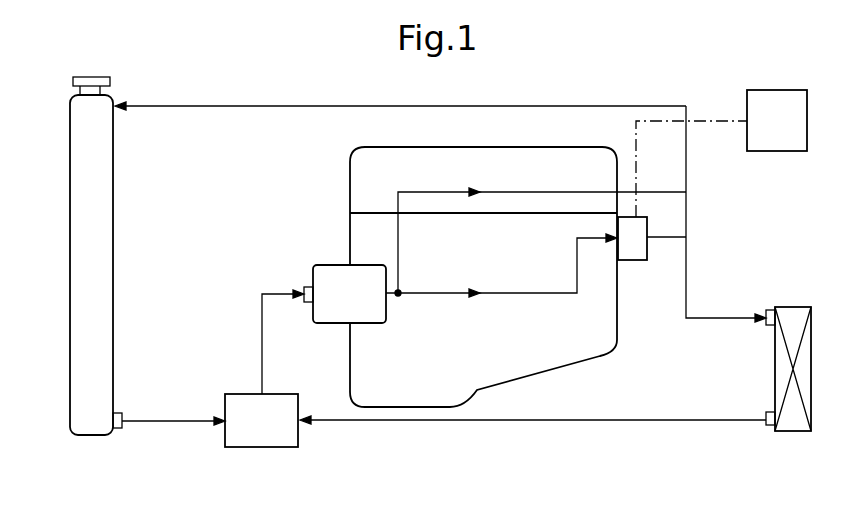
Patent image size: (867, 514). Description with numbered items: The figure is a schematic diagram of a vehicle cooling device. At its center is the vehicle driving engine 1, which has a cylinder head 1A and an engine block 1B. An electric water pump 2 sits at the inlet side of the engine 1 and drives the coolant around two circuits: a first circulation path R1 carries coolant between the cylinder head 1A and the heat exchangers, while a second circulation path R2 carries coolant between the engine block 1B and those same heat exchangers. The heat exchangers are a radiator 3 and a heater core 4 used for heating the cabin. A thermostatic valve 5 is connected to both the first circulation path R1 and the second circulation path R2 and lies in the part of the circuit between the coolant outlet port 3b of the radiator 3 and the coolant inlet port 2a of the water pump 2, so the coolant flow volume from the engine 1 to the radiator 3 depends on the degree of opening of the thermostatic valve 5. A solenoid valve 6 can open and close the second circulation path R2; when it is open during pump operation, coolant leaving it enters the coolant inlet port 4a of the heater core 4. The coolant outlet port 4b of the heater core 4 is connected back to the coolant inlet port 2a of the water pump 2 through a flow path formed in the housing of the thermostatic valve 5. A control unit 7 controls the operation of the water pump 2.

The vehicle driving engine 1 is at (464, 259).
The cylinder head 1A is at (535, 167).
The engine block 1B is at (583, 352).
The electric water pump 2 is at (330, 264).
The coolant inlet port 2a is at (304, 289).
The radiator 3 is at (70, 190).
The coolant outlet port 3b is at (120, 412).
The heater core 4 is at (793, 307).
The coolant inlet port 4a is at (770, 328).
The coolant outlet port 4b is at (770, 428).
The thermostatic valve 5 is at (246, 393).
The solenoid valve 6 is at (648, 222).
The control unit 7 is at (808, 121).
The first circulation path R1 is at (430, 192).
The second circulation path R2 is at (498, 292).